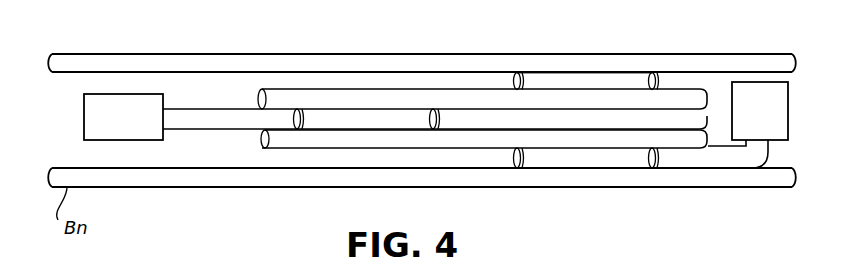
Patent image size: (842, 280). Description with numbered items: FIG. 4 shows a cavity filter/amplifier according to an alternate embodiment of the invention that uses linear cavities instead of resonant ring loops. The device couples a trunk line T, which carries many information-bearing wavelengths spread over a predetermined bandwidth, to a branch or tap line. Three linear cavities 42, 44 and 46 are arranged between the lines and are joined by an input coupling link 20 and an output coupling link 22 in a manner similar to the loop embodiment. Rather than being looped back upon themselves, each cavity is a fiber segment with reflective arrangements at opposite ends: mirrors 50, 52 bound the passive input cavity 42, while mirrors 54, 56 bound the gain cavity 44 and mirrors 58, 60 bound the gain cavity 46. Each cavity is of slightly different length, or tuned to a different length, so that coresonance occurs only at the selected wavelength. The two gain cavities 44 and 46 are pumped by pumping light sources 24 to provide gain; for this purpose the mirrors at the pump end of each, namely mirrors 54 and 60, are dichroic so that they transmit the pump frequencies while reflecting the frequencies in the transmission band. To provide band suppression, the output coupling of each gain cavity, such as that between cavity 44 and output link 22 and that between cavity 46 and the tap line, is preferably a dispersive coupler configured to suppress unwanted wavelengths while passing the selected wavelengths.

The trunk line T is at (97, 58).
The pumping light source 24 is at (95, 94).
The input coupling link 20 is at (488, 97).
The output coupling link 22 is at (451, 153).
The linear cavity 42 is at (603, 80).
The gain cavity 44 is at (350, 117).
The gain cavity 46 is at (588, 162).
The mirror 50 is at (527, 82).
The mirror 52 is at (653, 82).
The mirror 54 is at (297, 110).
The mirror 56 is at (425, 110).
The mirror 58 is at (525, 168).
The mirror 60 is at (653, 168).